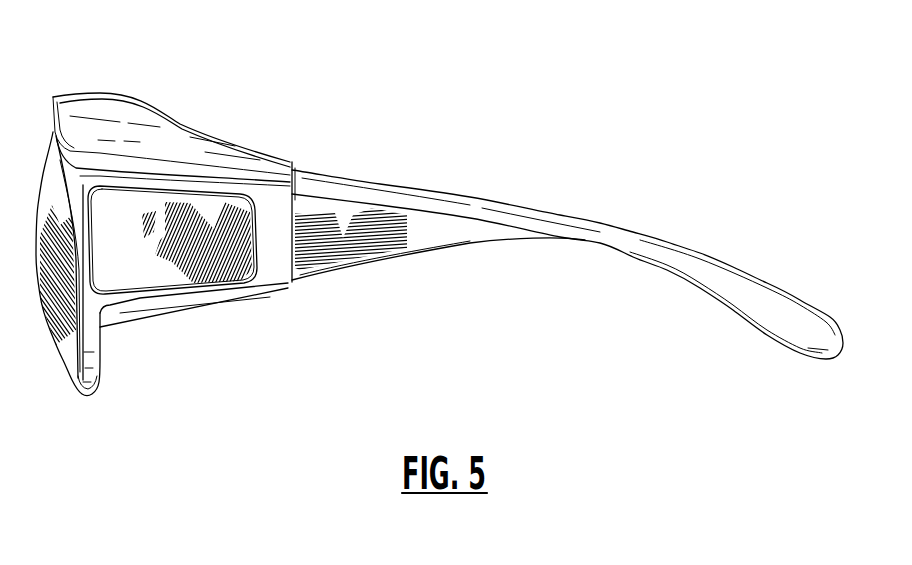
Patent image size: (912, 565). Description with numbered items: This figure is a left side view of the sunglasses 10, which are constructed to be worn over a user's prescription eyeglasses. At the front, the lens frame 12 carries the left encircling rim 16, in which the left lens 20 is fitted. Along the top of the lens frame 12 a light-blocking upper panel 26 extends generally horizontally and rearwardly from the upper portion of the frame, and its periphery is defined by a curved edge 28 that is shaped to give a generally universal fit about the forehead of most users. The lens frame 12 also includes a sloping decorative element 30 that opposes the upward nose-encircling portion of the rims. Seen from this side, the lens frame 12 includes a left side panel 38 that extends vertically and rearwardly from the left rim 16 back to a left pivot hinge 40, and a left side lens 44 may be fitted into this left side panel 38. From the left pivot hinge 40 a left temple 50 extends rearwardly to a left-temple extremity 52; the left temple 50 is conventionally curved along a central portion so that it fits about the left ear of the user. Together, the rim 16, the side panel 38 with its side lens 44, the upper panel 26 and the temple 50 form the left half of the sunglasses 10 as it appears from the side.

The sunglasses 10 is at (404, 70).
The lens frame 12 is at (100, 94).
The left encircling rim 16 is at (85, 392).
The left lens 20 is at (50, 267).
The light-blocking upper panel 26 is at (153, 132).
The curved edge 28 is at (215, 142).
The sloping decorative element 30 is at (289, 167).
The left side panel 38 is at (269, 258).
The left pivot hinge 40 is at (296, 193).
The left side lens 44 is at (117, 261).
The left temple 50 is at (440, 229).
The left-temple extremity 52 is at (770, 320).